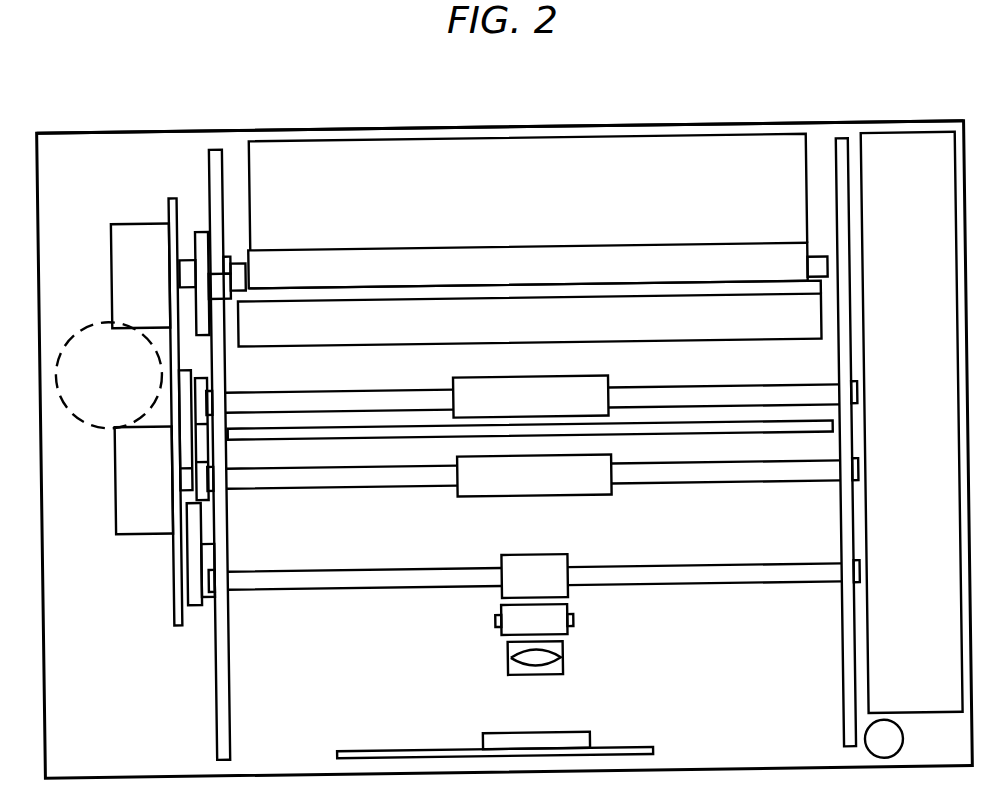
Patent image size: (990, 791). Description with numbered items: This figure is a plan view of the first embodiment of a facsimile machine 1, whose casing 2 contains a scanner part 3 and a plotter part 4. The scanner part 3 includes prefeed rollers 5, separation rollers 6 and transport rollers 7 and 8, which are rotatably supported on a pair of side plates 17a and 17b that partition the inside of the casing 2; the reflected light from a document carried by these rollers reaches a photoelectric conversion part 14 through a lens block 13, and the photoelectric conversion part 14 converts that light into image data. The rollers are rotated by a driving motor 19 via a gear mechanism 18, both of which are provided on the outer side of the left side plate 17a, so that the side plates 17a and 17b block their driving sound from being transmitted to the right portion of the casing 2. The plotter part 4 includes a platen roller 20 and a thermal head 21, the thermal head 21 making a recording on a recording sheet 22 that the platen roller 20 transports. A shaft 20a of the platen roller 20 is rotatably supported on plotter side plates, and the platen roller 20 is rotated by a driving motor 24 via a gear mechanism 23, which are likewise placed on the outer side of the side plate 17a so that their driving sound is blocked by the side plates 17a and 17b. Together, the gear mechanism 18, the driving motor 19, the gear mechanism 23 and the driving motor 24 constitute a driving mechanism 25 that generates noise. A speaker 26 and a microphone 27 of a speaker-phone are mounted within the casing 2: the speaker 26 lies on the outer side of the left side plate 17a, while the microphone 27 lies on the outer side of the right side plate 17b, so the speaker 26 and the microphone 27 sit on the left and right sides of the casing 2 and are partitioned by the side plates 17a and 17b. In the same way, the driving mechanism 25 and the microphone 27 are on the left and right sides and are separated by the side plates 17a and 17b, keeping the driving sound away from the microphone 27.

The facsimile machine 1 is at (770, 114).
The casing 2 is at (567, 128).
The scanner part 3 is at (688, 600).
The plotter part 4 is at (755, 350).
The prefeed rollers 5 is at (571, 618).
The separation rollers 6 is at (555, 557).
The transport roller 7 is at (536, 497).
The transport roller 8 is at (549, 378).
The lens block 13 is at (560, 649).
The photoelectric conversion part 14 is at (588, 737).
The left side plate 17a is at (226, 727).
The right side plate 17b is at (840, 707).
The gear mechanism 18 is at (198, 613).
The driving motor 19 is at (150, 531).
The platen roller 20 is at (386, 246).
The shaft 20a is at (813, 260).
The thermal head 21 is at (293, 342).
The recording sheet 22 is at (257, 193).
The gear mechanism 23 is at (199, 228).
The driving motor 24 is at (141, 217).
The driving mechanism 25 is at (149, 630).
The speaker 26 is at (106, 424).
The microphone 27 is at (899, 745).